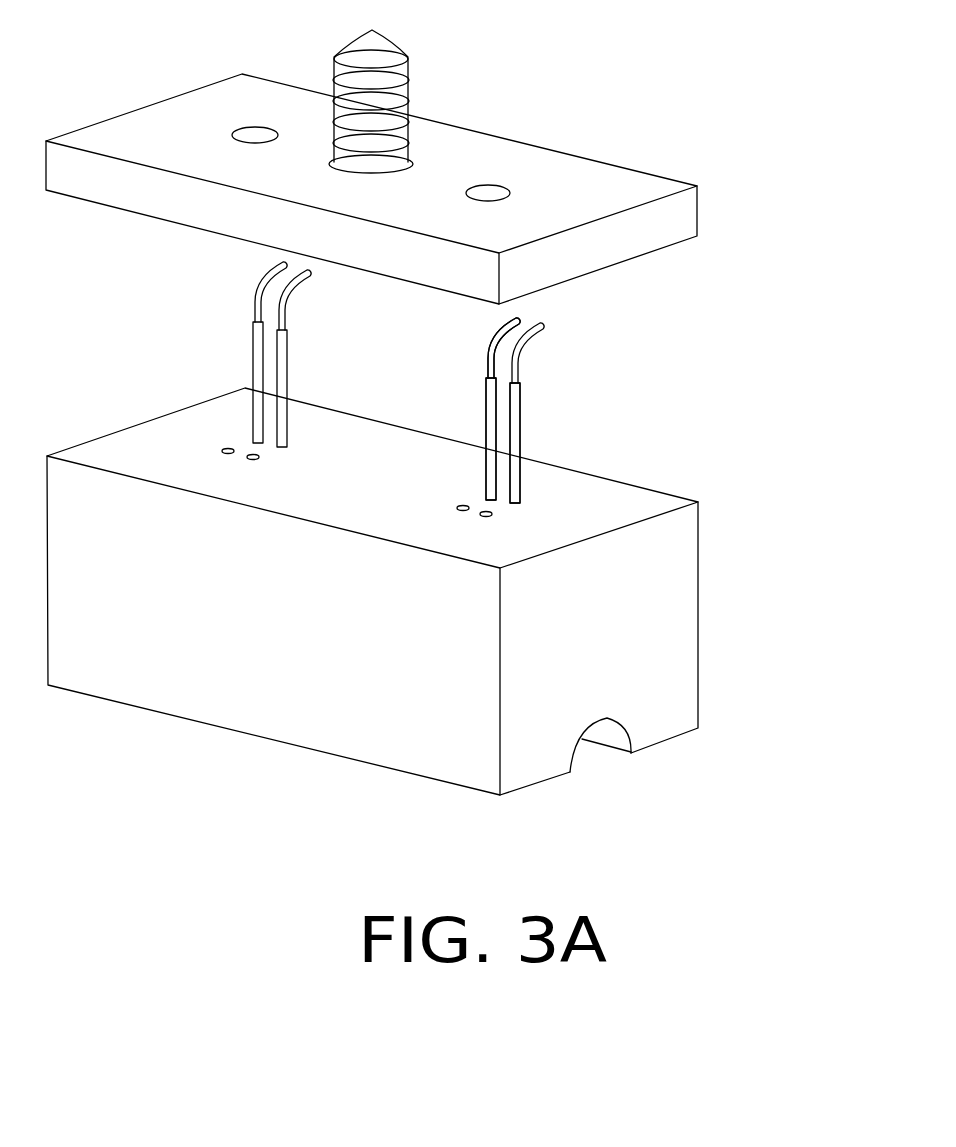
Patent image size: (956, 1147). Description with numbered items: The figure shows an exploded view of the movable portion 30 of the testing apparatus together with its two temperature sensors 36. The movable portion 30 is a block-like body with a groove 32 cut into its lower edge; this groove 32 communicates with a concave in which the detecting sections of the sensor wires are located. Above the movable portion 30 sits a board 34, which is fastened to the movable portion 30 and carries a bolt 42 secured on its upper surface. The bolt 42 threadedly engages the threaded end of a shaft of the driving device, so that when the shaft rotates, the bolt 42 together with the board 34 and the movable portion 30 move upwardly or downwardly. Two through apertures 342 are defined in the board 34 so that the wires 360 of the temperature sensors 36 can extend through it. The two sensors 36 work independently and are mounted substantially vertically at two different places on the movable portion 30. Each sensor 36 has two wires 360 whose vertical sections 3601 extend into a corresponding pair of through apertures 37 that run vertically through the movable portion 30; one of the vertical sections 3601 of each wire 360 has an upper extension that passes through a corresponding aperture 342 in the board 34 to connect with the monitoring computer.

The movable portion 30 is at (663, 583).
The groove 32 is at (593, 757).
The board 34 is at (667, 226).
The through apertures 342 is at (488, 193).
The temperature sensors 36 is at (521, 400).
The wires 360 is at (512, 431).
The vertical sections 3601 is at (490, 433).
The through apertures 37 is at (253, 455).
The bolt 42 is at (403, 85).